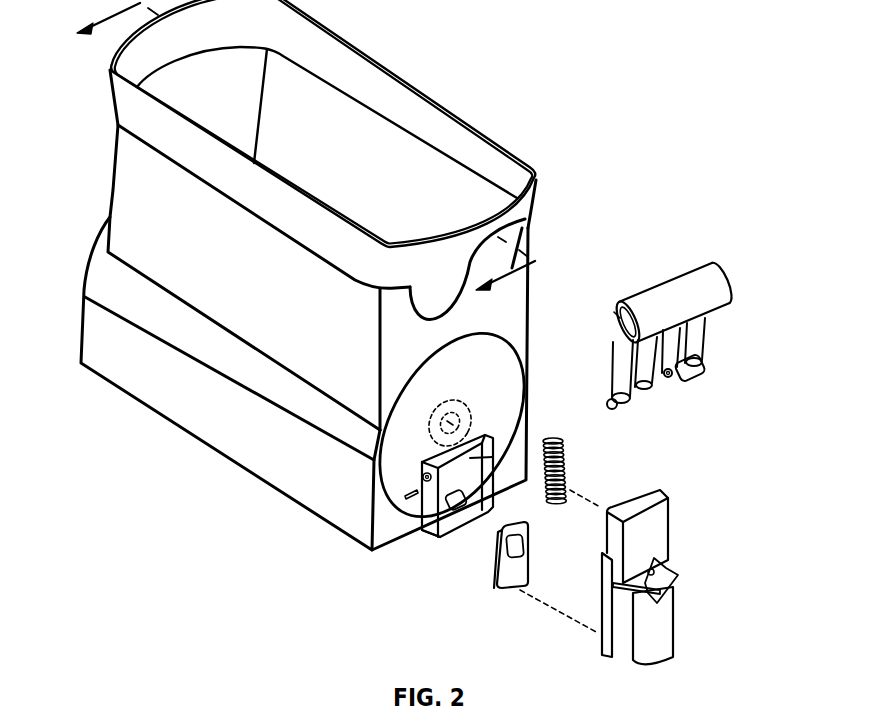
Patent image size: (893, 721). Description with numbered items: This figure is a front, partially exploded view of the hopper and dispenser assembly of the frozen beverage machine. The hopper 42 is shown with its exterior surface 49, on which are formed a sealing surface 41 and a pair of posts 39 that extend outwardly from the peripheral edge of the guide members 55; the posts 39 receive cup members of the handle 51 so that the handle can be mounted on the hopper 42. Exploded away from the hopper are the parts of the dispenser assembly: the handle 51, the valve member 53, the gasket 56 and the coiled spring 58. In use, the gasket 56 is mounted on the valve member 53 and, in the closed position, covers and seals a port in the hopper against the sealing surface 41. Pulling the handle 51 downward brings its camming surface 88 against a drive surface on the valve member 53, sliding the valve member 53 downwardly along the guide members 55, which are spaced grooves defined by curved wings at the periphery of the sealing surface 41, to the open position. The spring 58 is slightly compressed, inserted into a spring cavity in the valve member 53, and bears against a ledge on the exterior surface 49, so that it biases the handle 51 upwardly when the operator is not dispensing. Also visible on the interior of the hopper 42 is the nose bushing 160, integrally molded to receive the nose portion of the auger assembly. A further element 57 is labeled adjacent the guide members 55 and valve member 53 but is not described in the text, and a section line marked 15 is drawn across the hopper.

The section line 15- 15 is at (293, 157).
The posts 39 is at (360, 517).
The sealing surface 41 is at (489, 434).
The hopper 42 is at (528, 162).
The exterior surface 49 is at (408, 352).
The handle 51 is at (731, 283).
The valve member 53 is at (660, 634).
The guide members 55 is at (432, 537).
The gasket 56 is at (521, 567).
The bracket rail 57 is at (492, 507).
The spring 58 is at (568, 470).
The camming surface 88 is at (703, 364).
The nose bushing 160 is at (462, 402).